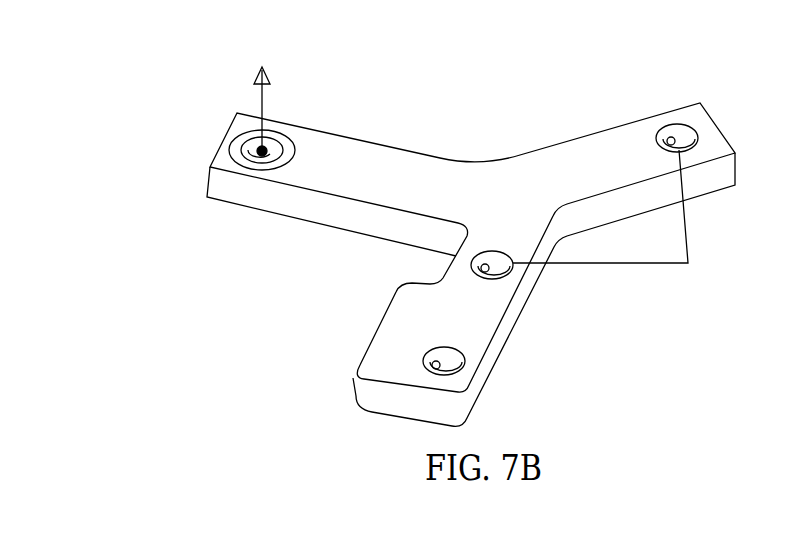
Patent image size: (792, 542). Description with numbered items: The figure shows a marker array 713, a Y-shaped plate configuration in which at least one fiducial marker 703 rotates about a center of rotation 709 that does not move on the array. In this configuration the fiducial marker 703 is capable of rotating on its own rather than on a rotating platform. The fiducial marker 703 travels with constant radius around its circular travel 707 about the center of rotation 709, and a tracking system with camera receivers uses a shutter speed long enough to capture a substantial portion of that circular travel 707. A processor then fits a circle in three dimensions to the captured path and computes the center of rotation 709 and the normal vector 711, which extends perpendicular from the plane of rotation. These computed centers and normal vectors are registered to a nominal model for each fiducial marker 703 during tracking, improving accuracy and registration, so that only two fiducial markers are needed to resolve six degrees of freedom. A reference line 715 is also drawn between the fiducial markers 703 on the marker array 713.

The fiducial marker 703 is at (690, 135).
The circular travel 707 is at (255, 172).
The center of rotation 709 is at (252, 146).
The normal vector 711 is at (264, 101).
The marker array 713 is at (448, 158).
The reference line between mounting holes 715 is at (622, 222).